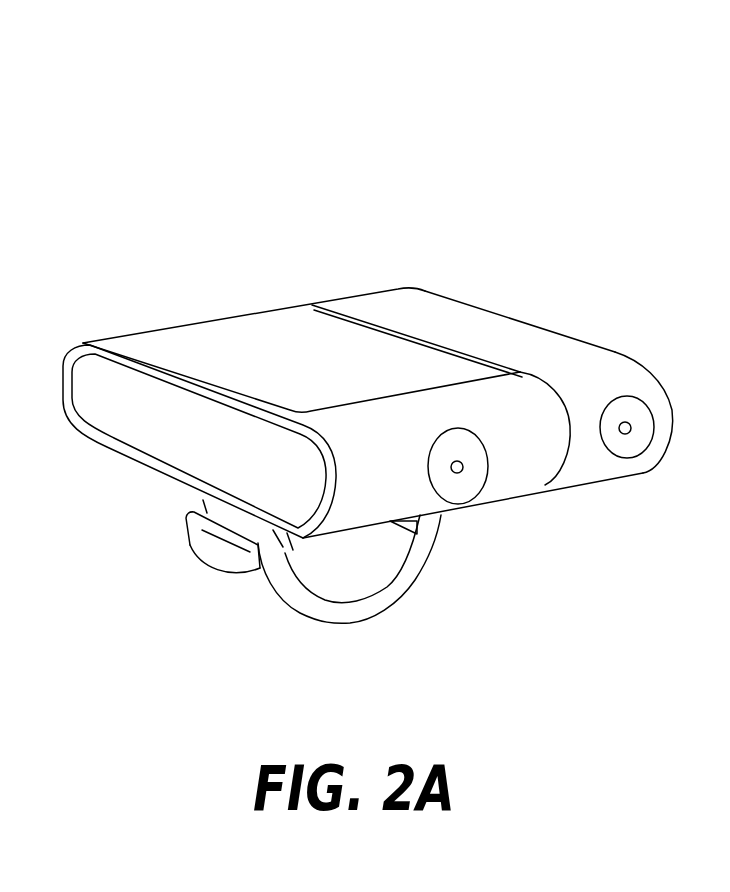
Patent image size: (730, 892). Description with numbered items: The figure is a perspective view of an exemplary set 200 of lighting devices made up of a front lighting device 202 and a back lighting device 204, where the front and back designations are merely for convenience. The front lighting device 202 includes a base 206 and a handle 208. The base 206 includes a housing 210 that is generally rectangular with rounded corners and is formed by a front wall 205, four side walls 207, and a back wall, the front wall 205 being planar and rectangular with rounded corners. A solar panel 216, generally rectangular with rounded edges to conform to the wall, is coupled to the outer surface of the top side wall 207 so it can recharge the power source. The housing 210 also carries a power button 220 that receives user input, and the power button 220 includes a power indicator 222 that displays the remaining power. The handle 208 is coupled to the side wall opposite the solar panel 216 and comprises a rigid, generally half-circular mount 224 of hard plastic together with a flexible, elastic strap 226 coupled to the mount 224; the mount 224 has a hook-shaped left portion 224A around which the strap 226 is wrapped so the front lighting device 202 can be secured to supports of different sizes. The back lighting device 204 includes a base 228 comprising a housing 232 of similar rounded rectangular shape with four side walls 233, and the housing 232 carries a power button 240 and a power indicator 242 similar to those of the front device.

The set of lighting devices 200 is at (162, 88).
The front lighting device 202 is at (121, 275).
The back lighting device 204 is at (430, 230).
The front wall 205 is at (178, 447).
The base 206 is at (103, 325).
The side walls 207 is at (528, 465).
The handle 208 is at (275, 625).
The housing 210 is at (272, 306).
The solar panel 216 is at (317, 330).
The power button 220 is at (453, 483).
The power indicator 222 is at (465, 470).
The mount 224 is at (202, 533).
The left portion 224A is at (247, 555).
The strap 226 is at (358, 607).
The base 228 is at (583, 348).
The housing 232 is at (493, 317).
The side walls 233 is at (650, 375).
The power button 240 is at (642, 418).
The power indicator 242 is at (627, 435).